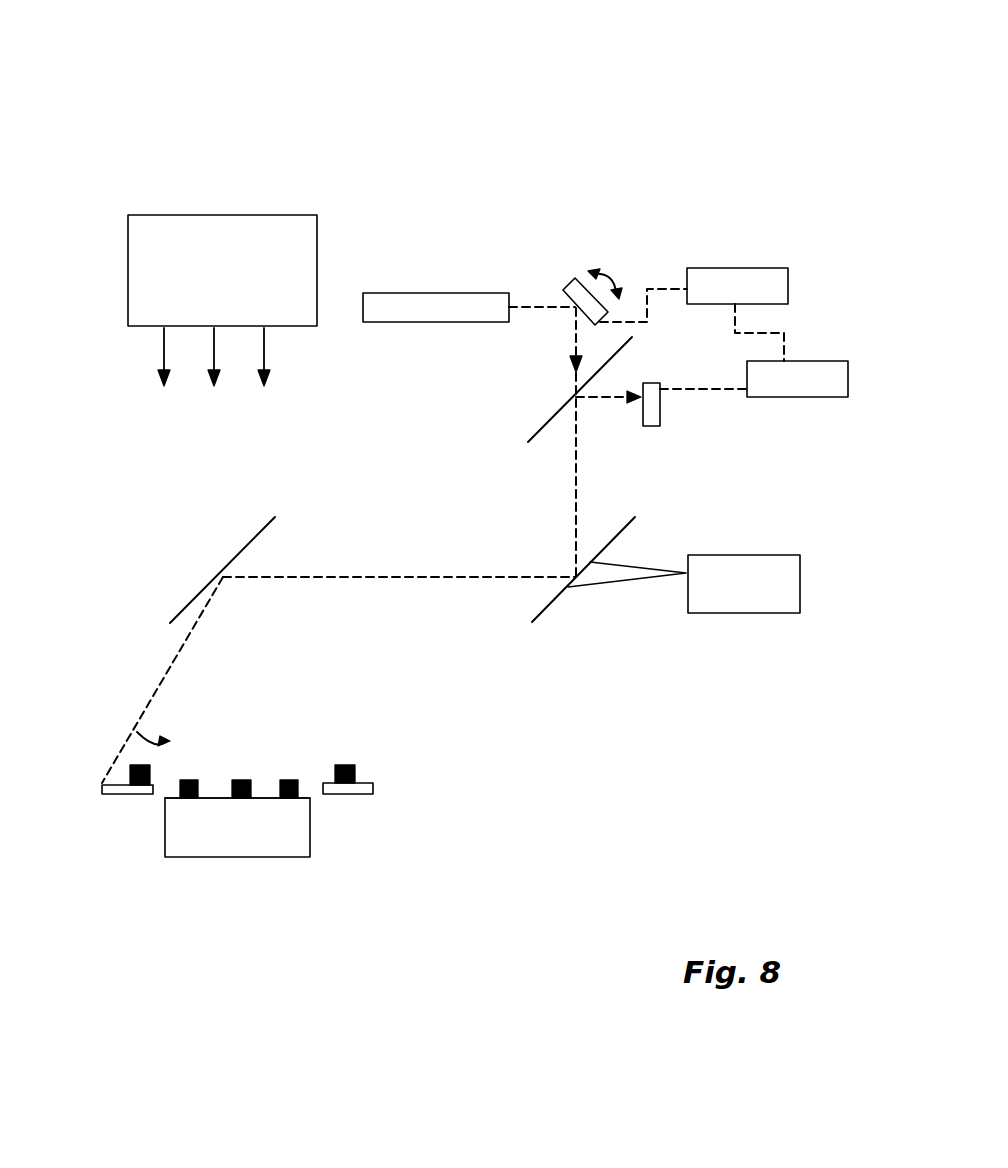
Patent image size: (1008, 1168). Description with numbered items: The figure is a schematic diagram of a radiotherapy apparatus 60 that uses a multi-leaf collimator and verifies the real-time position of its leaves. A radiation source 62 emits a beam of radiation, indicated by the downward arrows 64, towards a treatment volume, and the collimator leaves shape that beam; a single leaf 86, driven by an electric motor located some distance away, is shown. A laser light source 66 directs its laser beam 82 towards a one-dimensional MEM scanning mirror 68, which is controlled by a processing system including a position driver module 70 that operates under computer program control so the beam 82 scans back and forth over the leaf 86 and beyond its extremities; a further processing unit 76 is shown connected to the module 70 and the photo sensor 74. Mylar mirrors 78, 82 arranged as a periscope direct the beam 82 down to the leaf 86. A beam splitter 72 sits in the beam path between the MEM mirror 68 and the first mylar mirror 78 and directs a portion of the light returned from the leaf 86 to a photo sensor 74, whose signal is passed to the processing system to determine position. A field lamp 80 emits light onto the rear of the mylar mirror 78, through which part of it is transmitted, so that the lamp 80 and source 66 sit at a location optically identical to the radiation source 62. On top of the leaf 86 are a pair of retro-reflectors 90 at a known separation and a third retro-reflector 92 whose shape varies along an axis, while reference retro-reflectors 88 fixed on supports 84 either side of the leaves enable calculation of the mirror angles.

The apparatus 60 is at (180, 73).
The radiation source 62 is at (200, 222).
The light beams 64 is at (163, 362).
The laser light source 66 is at (440, 293).
The MEM scanning mirror 68 is at (568, 288).
The position driver module 70 is at (740, 268).
The beam splitter 72 is at (540, 425).
The photo sensor 74 is at (661, 412).
The processor 76 is at (820, 398).
The mylar mirror 78 is at (550, 605).
The field lamp 80 is at (773, 613).
The laser beam 82 is at (200, 587).
The support 84 is at (362, 795).
The leaf 86 is at (170, 830).
The reference retro-reflector 88 is at (340, 765).
The retro-reflector 90 is at (290, 782).
The third retro-reflector 92 is at (237, 798).